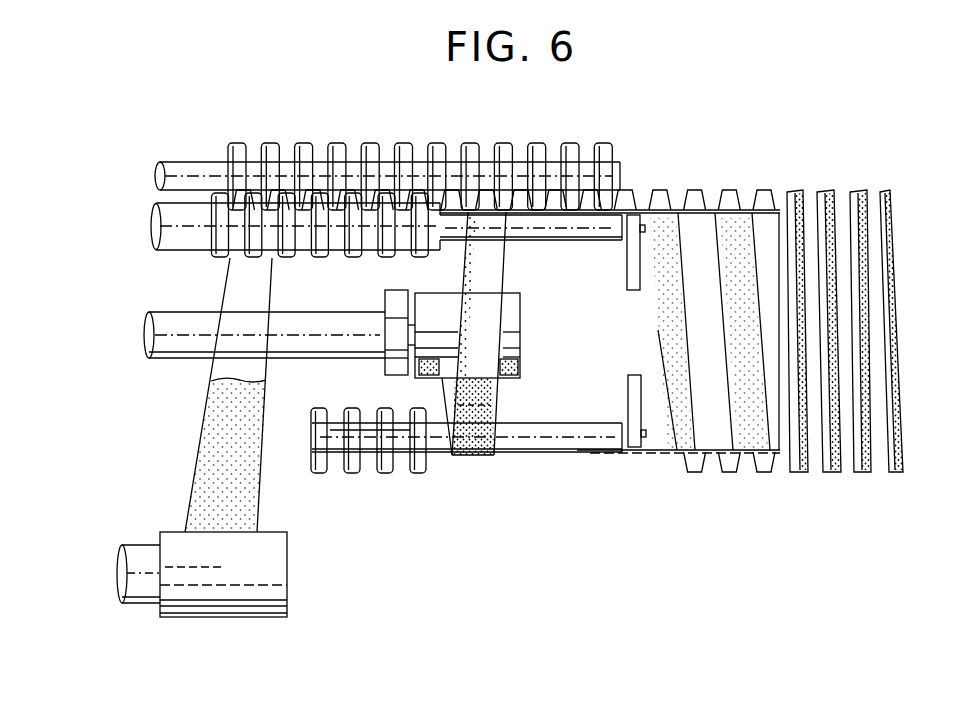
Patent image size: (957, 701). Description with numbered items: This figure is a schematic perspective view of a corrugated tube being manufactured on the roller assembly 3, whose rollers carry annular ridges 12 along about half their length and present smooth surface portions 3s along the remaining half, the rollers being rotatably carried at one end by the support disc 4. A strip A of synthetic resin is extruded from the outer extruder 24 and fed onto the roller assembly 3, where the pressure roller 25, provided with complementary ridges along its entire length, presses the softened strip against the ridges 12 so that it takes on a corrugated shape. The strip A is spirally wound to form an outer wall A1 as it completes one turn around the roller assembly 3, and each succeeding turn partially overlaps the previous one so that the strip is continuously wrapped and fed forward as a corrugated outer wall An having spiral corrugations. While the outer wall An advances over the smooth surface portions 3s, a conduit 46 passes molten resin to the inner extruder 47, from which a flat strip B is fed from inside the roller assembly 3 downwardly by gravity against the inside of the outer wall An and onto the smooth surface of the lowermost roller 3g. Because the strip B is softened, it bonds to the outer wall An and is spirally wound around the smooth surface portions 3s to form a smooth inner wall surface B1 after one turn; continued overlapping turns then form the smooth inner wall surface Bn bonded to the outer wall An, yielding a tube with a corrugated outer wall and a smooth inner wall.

The pressure roller 25 is at (190, 164).
The outer wall A1 is at (284, 175).
The smooth inner wall surface B1 is at (515, 167).
The corrugated outer wall An is at (697, 190).
The smooth inner wall surface Bn is at (732, 215).
The annular ridges 12 is at (353, 259).
The smooth surface portions 3s is at (450, 243).
The lowermost roller 3g is at (558, 453).
The roller assembly 3 is at (401, 470).
The support disc 4 is at (627, 250).
The conduit 46 is at (173, 362).
The inner extruder 47 is at (515, 323).
The strip A is at (200, 472).
The strip B is at (477, 457).
The outer extruder 24 is at (277, 575).